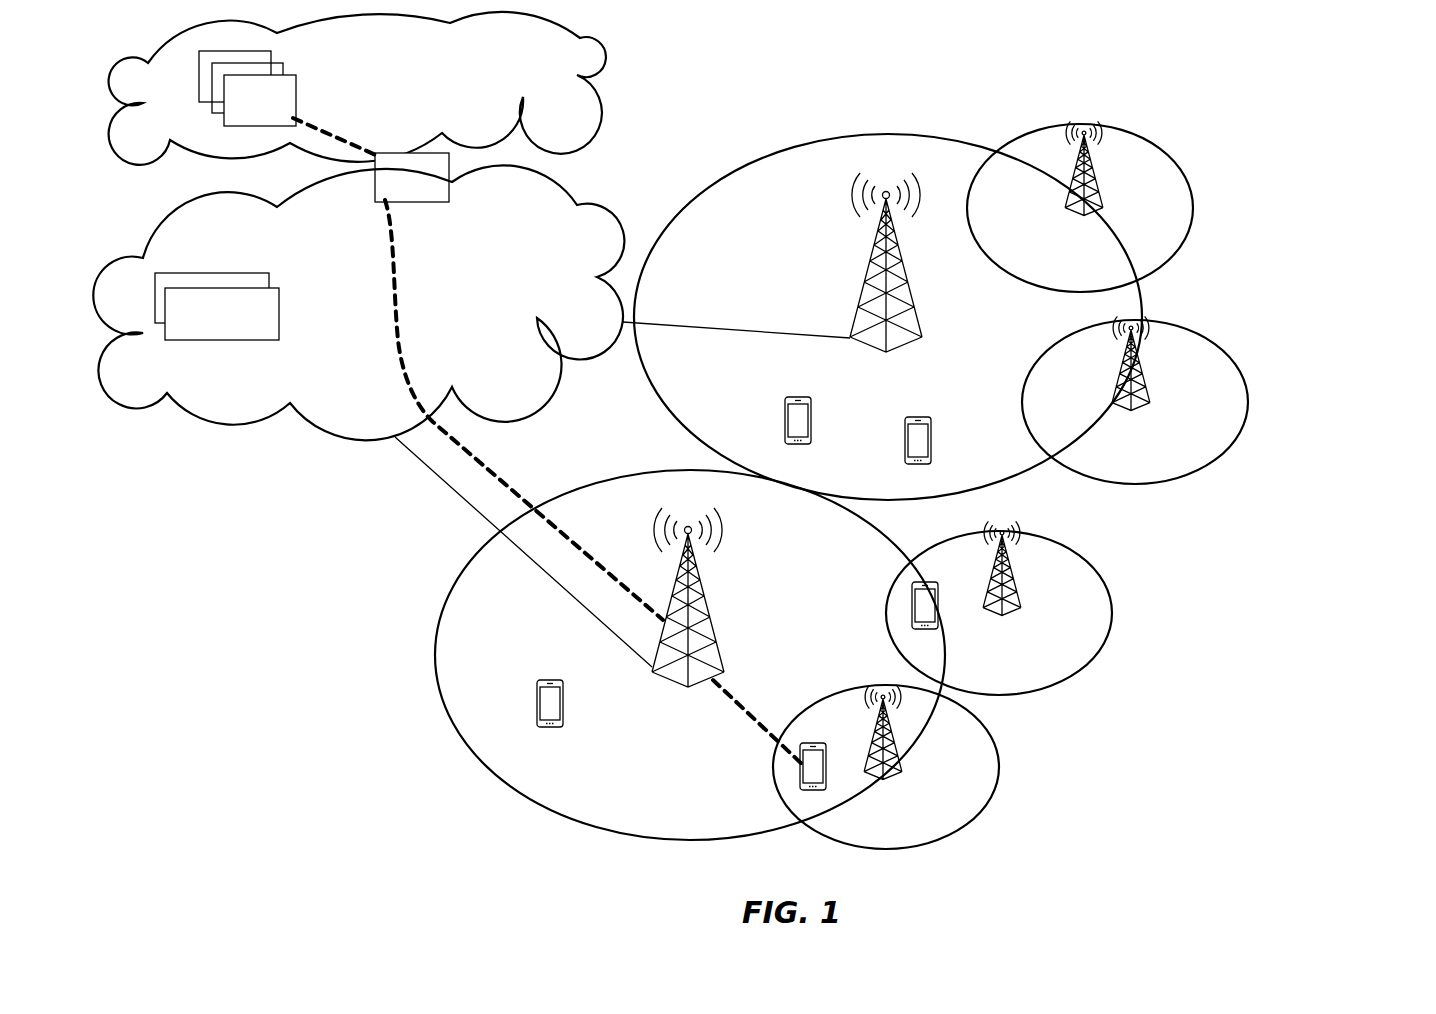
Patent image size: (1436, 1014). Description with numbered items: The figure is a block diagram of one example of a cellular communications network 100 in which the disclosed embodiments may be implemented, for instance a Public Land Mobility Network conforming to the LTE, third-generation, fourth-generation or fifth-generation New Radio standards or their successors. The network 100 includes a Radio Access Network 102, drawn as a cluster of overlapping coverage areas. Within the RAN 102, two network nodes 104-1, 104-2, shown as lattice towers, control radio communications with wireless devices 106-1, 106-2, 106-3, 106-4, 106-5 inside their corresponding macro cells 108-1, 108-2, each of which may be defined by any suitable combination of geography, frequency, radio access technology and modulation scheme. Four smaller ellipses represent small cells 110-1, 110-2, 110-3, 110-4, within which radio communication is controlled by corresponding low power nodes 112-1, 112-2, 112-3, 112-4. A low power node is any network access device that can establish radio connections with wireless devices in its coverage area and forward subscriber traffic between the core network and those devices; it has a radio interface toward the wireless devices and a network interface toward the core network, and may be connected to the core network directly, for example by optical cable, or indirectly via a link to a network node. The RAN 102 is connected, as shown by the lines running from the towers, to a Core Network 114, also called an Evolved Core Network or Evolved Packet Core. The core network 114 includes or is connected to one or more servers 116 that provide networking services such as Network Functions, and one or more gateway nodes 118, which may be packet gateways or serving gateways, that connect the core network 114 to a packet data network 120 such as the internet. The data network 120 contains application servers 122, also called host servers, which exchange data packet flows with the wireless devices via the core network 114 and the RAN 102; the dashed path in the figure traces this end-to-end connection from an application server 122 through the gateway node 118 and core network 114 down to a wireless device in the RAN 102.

The cellular communications network 100 is at (1313, 110).
The Radio Access Network 102 is at (1183, 690).
The network node 104-1 is at (718, 622).
The network node 104-2 is at (917, 316).
The wireless device 106-1 is at (553, 728).
The wireless device 106-2 is at (815, 742).
The wireless device 106-3 is at (925, 629).
The wireless device 106-4 is at (812, 410).
The wireless device 106-5 is at (931, 430).
The macro cell 108-1 is at (690, 655).
The macro cell 108-2 is at (888, 317).
The small cell 110-1 is at (998, 767).
The small cell 110-2 is at (1112, 612).
The small cell 110-3 is at (1248, 400).
The small cell 110-4 is at (1193, 210).
The low power node 112-1 is at (893, 778).
The low power node 112-2 is at (1010, 612).
The low power node 112-3 is at (1140, 410).
The low power node 112-4 is at (1080, 215).
The core network 114 is at (358, 302).
The server 116 is at (233, 340).
The gateway node 118 is at (440, 202).
The packet data network 120 is at (357, 88).
The application server 122 is at (296, 103).